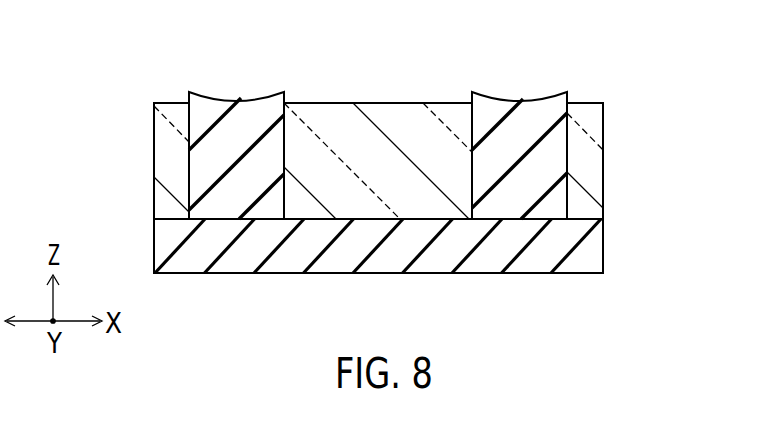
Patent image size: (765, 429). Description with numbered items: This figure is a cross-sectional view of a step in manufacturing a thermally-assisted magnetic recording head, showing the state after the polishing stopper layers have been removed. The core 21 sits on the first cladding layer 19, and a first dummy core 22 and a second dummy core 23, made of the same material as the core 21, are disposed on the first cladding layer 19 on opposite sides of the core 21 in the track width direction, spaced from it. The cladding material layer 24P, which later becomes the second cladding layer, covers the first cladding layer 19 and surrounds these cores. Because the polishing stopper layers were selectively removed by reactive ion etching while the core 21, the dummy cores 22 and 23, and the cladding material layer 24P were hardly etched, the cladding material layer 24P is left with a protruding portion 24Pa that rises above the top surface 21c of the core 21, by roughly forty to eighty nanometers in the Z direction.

The first cladding layer 19 is at (603, 246).
The core 21 is at (352, 103).
The top surface of the core 21c is at (395, 103).
The first dummy core 22 is at (153, 150).
The second dummy core 23 is at (603, 153).
The cladding material layer 24P is at (228, 104).
The protruding portion 24Pa is at (284, 103).